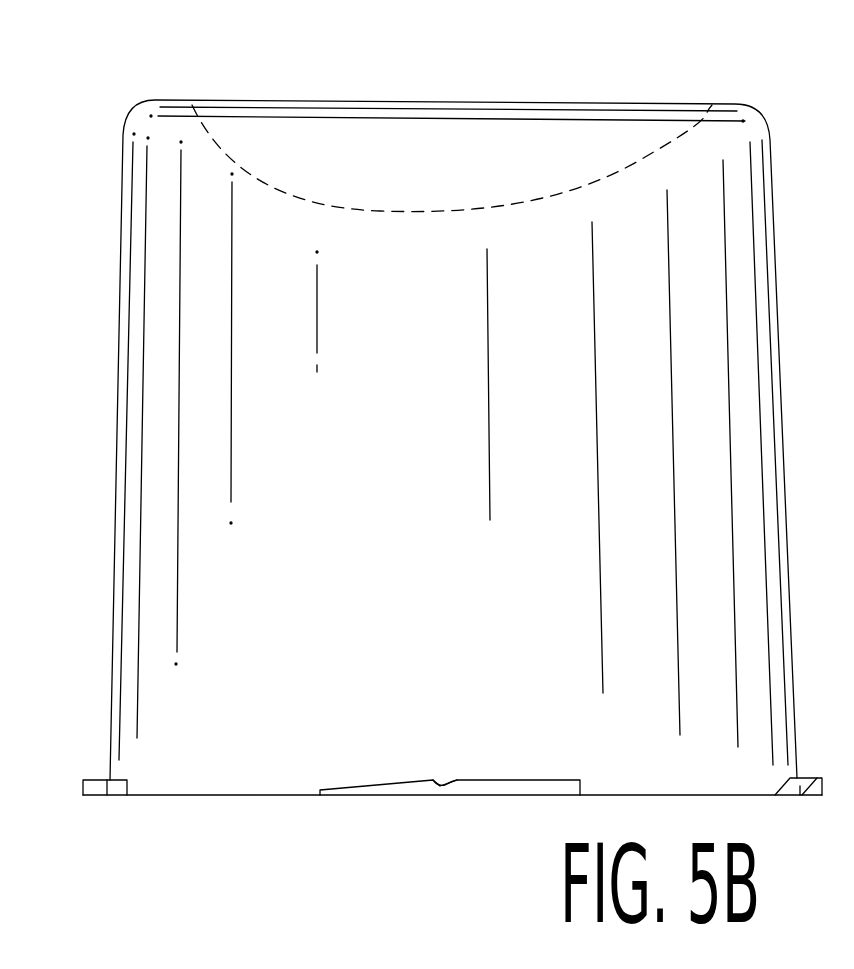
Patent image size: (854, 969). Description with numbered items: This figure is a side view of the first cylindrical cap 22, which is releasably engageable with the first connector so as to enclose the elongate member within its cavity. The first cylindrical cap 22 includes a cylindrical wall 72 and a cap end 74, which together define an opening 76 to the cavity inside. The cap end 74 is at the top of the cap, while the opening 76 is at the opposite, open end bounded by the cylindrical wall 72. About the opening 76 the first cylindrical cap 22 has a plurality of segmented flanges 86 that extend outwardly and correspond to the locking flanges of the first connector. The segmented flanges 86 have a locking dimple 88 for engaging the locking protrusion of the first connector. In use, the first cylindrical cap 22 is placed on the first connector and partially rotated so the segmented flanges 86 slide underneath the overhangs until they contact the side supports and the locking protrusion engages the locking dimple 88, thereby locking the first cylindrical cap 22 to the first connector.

The first cylindrical cap 22 is at (111, 79).
The cylindrical wall 72 is at (117, 448).
The cap end 74 is at (228, 100).
The opening 76 is at (207, 797).
The segmented flanges 86 is at (387, 790).
The locking dimple 88 is at (455, 785).